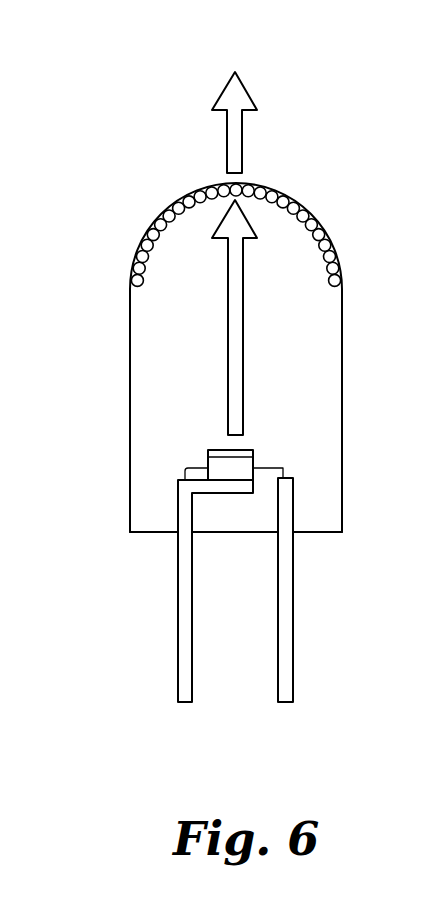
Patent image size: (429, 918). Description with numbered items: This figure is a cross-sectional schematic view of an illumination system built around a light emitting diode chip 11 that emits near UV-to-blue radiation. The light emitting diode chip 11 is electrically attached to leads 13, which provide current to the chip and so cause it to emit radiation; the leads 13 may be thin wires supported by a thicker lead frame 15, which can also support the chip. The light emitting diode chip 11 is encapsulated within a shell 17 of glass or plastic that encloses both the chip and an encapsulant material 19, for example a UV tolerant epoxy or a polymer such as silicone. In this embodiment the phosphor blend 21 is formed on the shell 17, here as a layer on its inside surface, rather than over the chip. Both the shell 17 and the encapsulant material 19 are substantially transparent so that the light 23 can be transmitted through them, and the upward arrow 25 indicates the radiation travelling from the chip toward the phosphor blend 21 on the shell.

The light emitting diode chip 11 is at (247, 462).
The leads 13 is at (186, 469).
The lead frame 15 is at (193, 693).
The shell 17 is at (331, 240).
The encapsulant material 19 is at (167, 304).
The phosphor blend 21 is at (140, 254).
The light 23 is at (225, 87).
The light from chip 25 is at (228, 377).